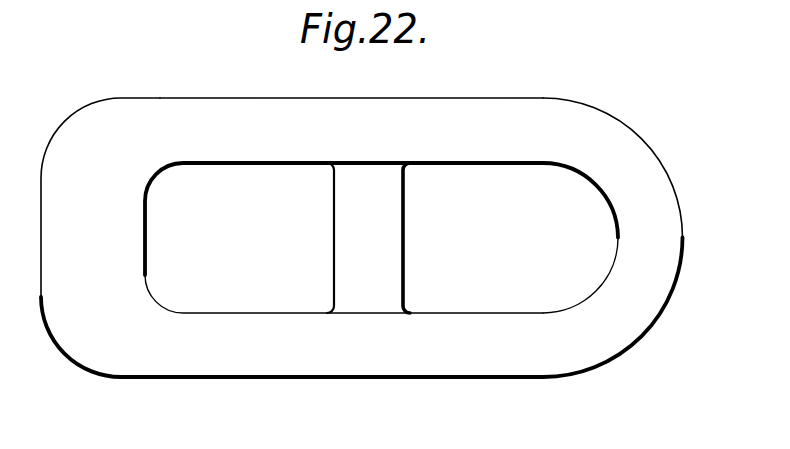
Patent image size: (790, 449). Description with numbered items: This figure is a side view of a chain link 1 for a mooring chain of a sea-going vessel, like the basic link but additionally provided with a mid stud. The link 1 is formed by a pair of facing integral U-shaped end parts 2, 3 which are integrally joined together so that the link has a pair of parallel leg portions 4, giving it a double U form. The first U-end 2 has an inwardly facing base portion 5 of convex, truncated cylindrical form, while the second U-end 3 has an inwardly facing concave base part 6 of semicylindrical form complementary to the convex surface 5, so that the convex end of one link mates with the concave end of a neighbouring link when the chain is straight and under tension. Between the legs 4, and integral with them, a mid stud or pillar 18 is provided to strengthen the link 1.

The link 1 is at (362, 206).
The first U-shaped end part 2 is at (65, 188).
The second U-shaped end part 3 is at (628, 158).
The leg portions 4 is at (453, 113).
The convex base portion 5 is at (125, 255).
The concave base part 6 is at (625, 242).
The mid stud 18 is at (380, 243).